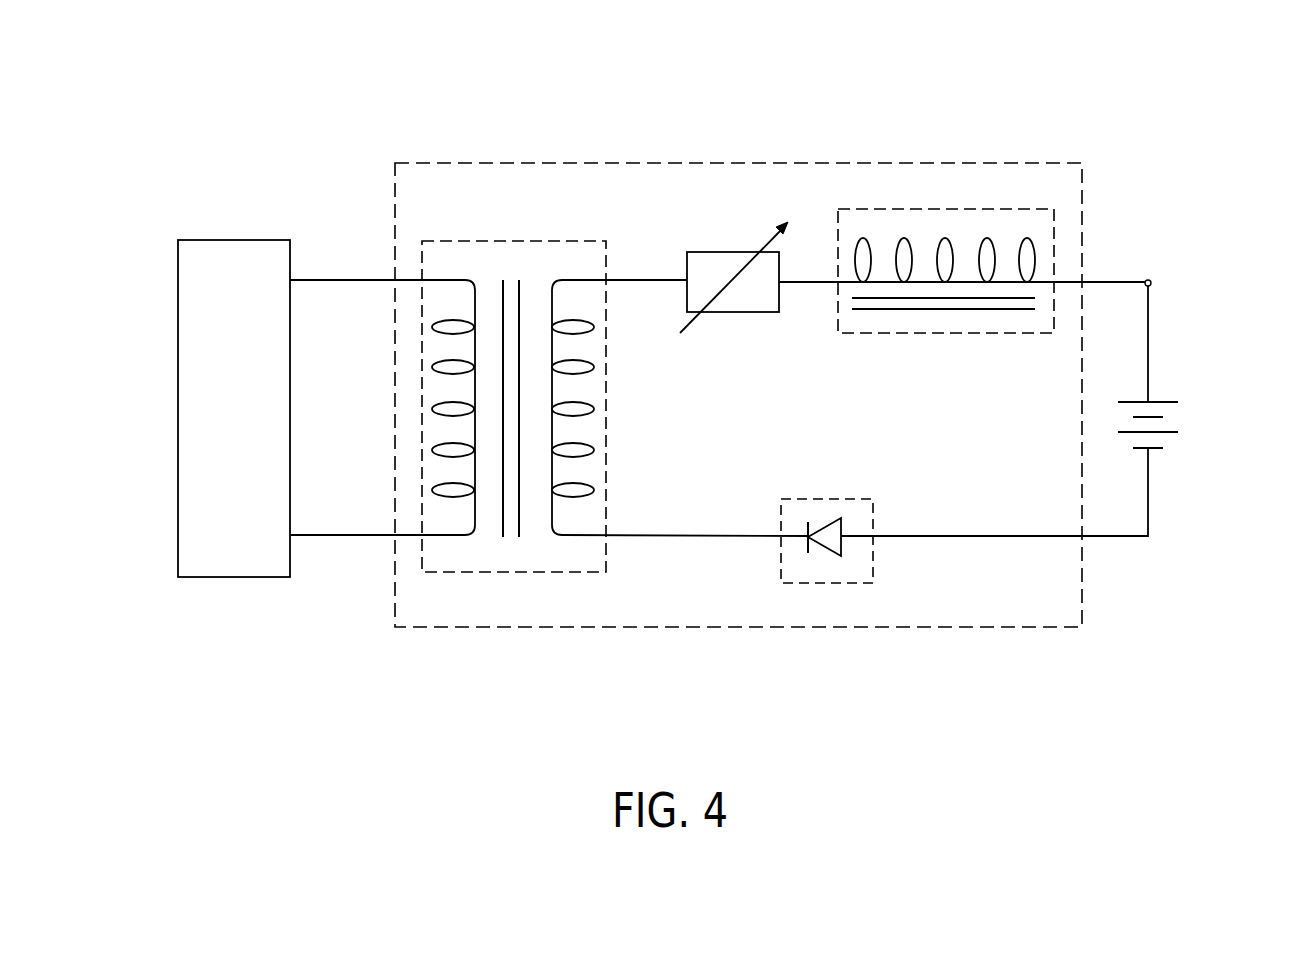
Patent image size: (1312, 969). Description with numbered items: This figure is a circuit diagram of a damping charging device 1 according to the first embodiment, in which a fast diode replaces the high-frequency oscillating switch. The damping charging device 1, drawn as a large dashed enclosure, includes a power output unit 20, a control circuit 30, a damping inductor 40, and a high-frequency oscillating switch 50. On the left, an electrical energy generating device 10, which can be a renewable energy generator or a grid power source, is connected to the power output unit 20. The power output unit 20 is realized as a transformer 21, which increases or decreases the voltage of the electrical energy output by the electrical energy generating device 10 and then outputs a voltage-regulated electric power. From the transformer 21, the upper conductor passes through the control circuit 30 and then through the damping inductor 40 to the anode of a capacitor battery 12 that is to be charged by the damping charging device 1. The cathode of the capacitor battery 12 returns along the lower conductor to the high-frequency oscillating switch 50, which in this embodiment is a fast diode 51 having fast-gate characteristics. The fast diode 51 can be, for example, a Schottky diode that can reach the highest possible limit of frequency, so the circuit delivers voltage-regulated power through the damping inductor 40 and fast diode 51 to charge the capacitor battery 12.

The damping charging device 1 is at (668, 163).
The electrical energy generating device 10 is at (178, 420).
The capacitor battery 12 is at (1170, 423).
The power output unit 20 is at (514, 416).
The transformer 21 is at (507, 273).
The control circuit 30 is at (707, 262).
The damping inductor 40 is at (930, 209).
The high-frequency oscillating switch 50 is at (827, 576).
The fast diode 51 is at (818, 518).